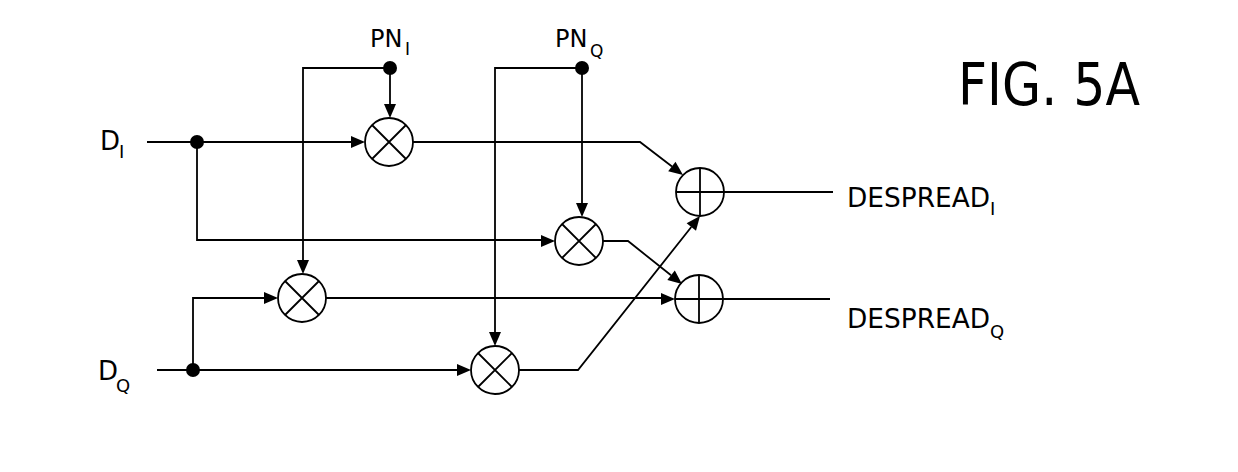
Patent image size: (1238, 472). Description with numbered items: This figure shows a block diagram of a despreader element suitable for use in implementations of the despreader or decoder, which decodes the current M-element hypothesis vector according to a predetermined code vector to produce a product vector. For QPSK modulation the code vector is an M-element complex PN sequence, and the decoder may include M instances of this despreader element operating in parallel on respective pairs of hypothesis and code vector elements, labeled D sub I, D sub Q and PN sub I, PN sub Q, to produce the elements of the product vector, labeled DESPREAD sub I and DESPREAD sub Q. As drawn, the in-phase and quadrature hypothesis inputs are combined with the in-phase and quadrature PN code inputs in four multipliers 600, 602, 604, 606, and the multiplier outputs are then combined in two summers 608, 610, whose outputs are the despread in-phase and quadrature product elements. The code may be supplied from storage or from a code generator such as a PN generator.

The multiplier (D_I x PN_I) 600 is at (406, 123).
The multiplier (D_Q x PN_I) 602 is at (318, 282).
The multiplier (D_I x PN_Q) 604 is at (595, 224).
The multiplier (D_Q x PN_Q) 606 is at (478, 352).
The summer producing DESPREAD_I 608 is at (716, 174).
The summer producing DESPREAD_Q 610 is at (717, 282).